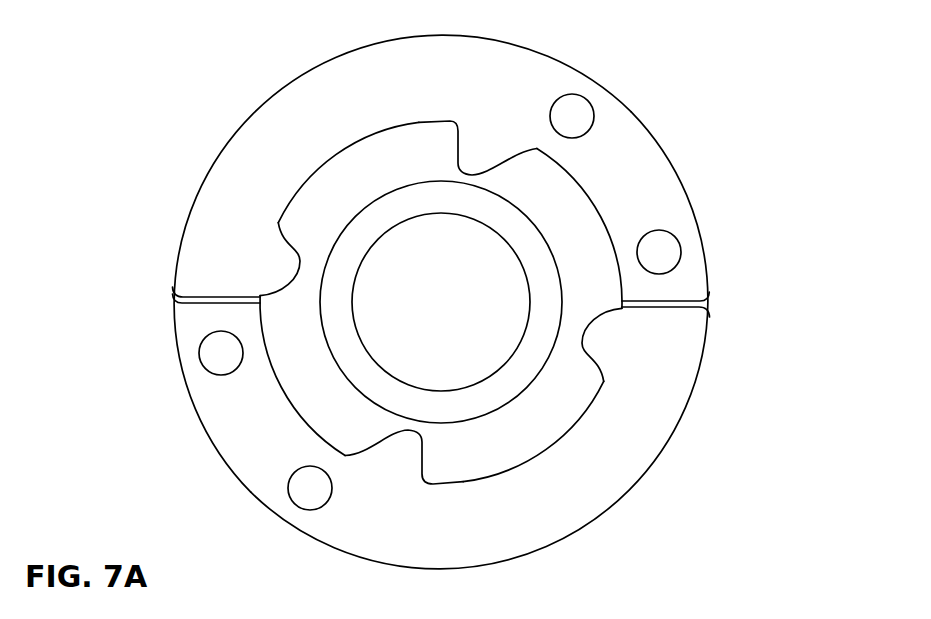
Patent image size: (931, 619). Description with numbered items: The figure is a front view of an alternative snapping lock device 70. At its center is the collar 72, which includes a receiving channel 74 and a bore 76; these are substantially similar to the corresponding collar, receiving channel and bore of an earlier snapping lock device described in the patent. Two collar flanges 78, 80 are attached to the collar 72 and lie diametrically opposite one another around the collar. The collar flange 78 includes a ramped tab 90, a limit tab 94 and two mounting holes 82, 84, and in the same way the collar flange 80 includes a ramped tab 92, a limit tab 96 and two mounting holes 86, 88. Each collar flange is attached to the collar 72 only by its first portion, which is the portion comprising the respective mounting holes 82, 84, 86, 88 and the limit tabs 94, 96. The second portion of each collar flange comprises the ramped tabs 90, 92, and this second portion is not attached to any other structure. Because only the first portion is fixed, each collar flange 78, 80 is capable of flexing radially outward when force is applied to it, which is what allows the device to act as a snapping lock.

The snapping lock device 70 is at (721, 145).
The collar 72 is at (303, 383).
The receiving channel 74 is at (473, 403).
The bore 76 is at (457, 360).
The collar flange 78 is at (272, 118).
The collar flange 80 is at (627, 478).
The mounting hole 82 is at (573, 110).
The mounting hole 84 is at (675, 252).
The mounting hole 86 is at (205, 353).
The mounting hole 88 is at (305, 497).
The ramped tab 90 is at (273, 277).
The ramped tab 92 is at (608, 337).
The limit tab 94 is at (480, 152).
The limit tab 96 is at (407, 453).